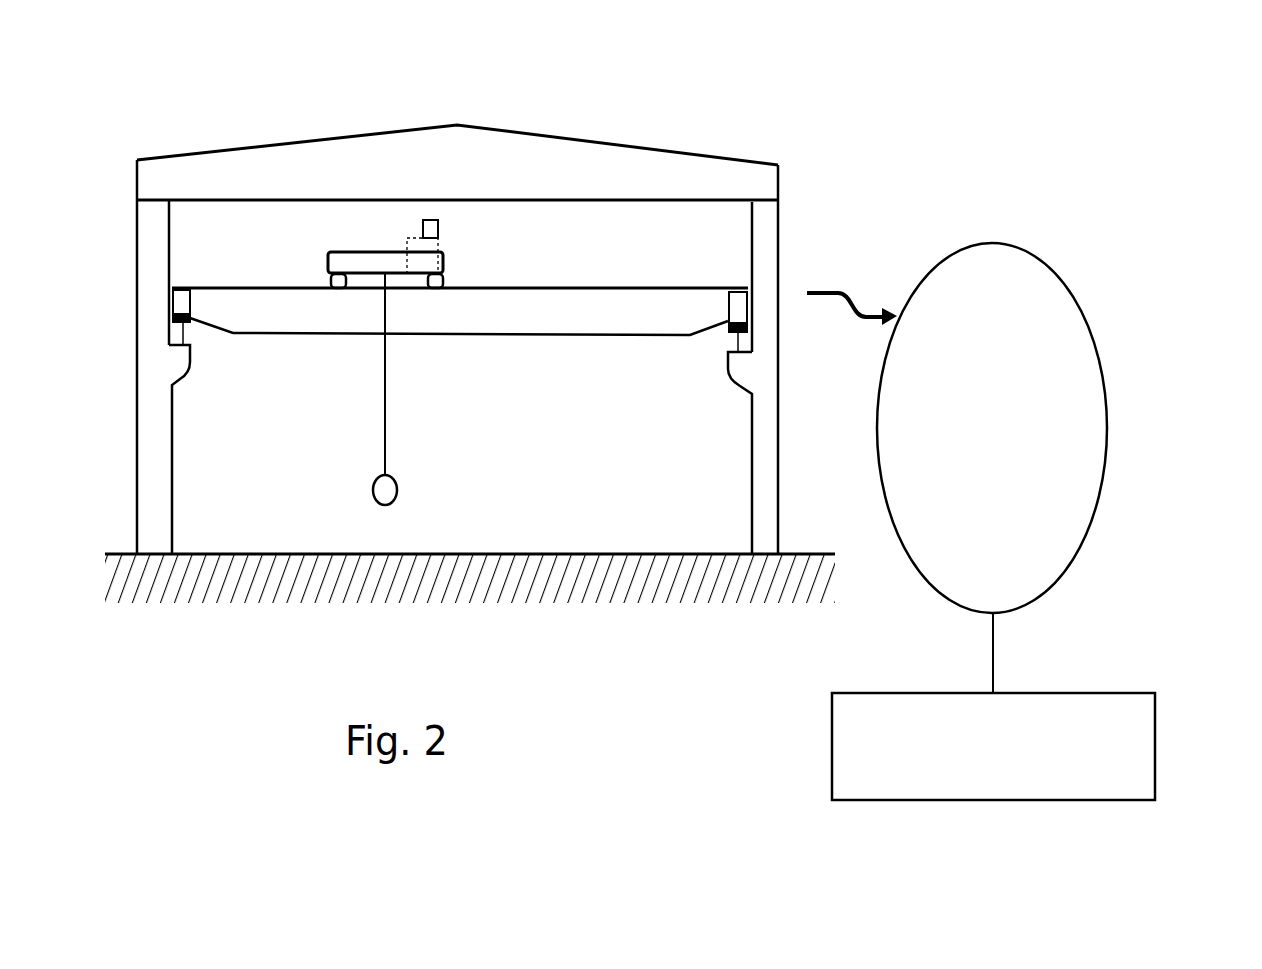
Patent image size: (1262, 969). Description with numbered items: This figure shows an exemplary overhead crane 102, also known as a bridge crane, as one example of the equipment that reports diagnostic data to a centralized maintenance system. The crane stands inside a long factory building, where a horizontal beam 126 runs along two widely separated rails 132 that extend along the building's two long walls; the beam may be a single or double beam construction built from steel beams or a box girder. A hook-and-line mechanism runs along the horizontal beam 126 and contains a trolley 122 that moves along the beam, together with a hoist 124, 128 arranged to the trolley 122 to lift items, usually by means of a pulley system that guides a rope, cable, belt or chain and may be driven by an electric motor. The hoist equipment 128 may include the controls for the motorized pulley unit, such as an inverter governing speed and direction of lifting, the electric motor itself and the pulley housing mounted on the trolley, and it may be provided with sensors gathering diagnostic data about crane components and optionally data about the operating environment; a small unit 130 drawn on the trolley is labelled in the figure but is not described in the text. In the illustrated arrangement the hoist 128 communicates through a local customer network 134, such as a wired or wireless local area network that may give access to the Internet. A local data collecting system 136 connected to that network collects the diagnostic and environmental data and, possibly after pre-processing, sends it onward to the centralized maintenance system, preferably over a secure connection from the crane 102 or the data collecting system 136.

The overhead crane 102 is at (799, 230).
The trolley 122 is at (330, 252).
The hoist 124 is at (397, 482).
The horizontal beam 126 is at (347, 335).
The hoist equipment 128 is at (445, 255).
The monitoring unit 130 is at (438, 222).
The rails 132 is at (728, 358).
The customer network 134 is at (1005, 243).
The data collecting system 136 is at (1115, 693).